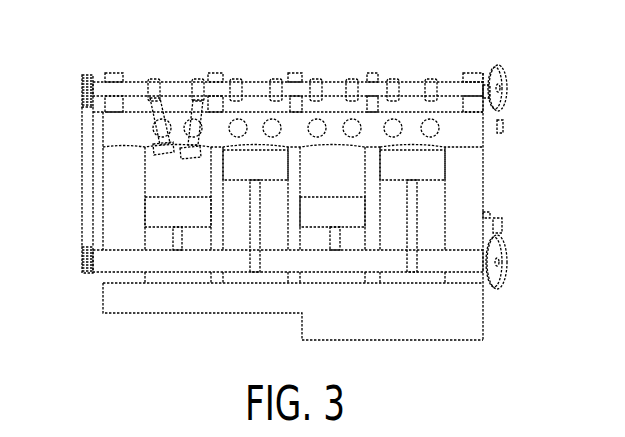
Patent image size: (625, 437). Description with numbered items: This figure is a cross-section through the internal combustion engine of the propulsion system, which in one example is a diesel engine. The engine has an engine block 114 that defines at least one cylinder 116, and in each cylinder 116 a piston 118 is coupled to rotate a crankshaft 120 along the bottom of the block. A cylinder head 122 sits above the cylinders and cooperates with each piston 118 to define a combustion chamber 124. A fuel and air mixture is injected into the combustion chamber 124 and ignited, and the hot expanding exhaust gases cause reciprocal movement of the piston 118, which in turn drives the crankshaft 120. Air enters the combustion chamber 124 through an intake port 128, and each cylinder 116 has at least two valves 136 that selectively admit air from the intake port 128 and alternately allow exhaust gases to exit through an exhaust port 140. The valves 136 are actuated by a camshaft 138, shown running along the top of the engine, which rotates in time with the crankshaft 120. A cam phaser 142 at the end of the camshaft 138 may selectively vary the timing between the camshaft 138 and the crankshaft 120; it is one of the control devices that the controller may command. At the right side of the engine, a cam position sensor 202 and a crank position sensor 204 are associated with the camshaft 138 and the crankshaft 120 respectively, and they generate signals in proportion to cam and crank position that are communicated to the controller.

The engine block 114 is at (110, 205).
The cylinder 116 is at (300, 173).
The piston 118 is at (322, 215).
The crankshaft 120 is at (188, 257).
The cylinder head 122 is at (110, 138).
The combustion chamber 124 is at (417, 147).
The intake port 128 is at (318, 126).
The valves 136 is at (165, 152).
The camshaft 138 is at (177, 82).
The exhaust port 140 is at (272, 127).
The cam phaser 142 is at (87, 73).
The cam position sensor 202 is at (488, 138).
The crank position sensor 204 is at (485, 213).